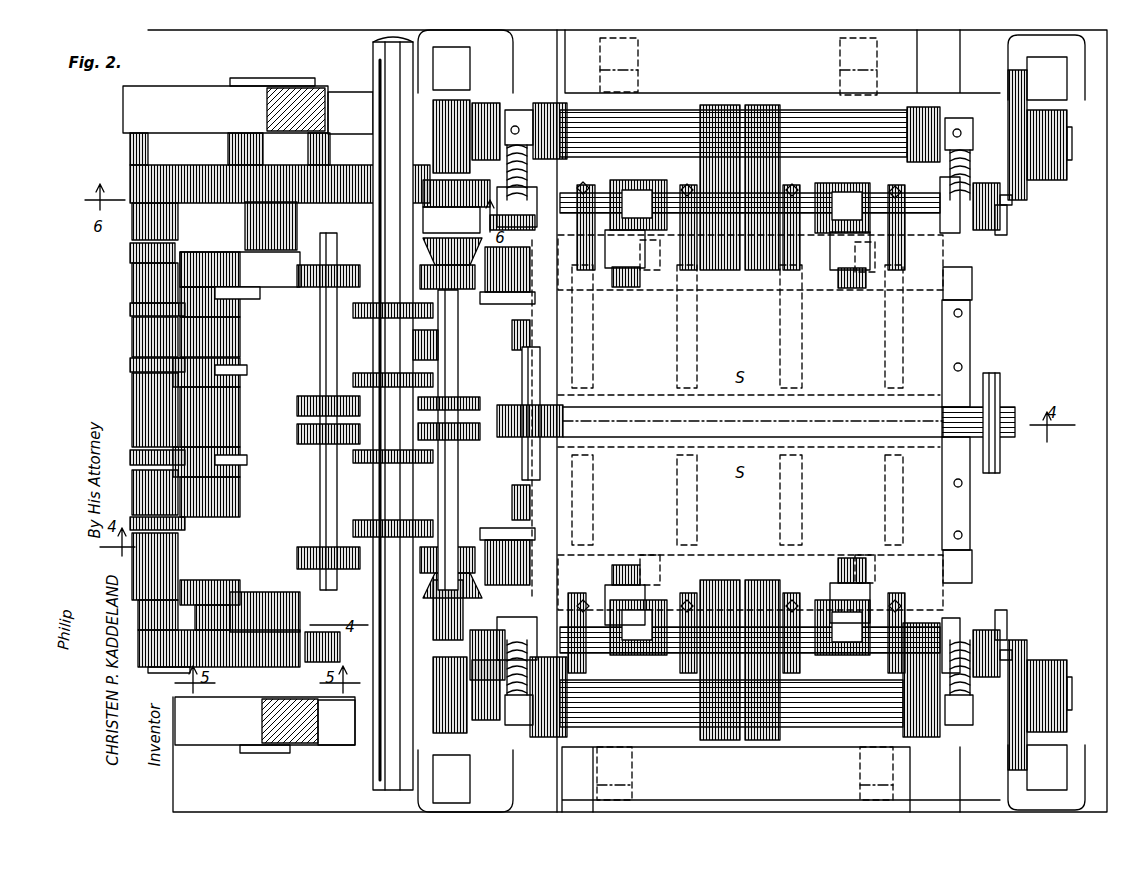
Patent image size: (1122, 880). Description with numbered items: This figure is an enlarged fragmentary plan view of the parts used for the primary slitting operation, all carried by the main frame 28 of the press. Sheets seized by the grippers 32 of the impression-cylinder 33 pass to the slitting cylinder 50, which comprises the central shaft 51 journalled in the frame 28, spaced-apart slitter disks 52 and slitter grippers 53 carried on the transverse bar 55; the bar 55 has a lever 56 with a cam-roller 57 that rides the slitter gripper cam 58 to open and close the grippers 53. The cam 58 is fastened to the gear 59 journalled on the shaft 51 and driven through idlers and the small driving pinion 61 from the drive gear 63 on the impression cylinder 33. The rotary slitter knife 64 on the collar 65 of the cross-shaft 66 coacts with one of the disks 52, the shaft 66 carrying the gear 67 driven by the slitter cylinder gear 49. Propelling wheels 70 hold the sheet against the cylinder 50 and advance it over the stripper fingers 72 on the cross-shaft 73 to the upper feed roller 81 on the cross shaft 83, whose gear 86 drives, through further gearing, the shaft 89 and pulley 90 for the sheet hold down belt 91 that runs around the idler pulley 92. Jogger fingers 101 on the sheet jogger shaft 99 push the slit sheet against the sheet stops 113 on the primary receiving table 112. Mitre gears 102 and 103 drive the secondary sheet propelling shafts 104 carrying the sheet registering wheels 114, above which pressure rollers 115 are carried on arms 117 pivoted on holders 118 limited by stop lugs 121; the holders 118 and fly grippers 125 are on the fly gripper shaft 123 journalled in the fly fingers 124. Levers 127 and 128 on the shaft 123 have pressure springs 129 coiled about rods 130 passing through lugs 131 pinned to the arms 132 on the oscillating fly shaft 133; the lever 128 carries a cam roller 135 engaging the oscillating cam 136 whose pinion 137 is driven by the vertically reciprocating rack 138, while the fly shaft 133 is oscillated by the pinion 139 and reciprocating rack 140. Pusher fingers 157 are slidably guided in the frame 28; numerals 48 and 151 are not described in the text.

The main frame 28 is at (333, 92).
The grippers 32 is at (130, 306).
The impression-cylinder 33 is at (132, 266).
The main gear 48 is at (163, 166).
The slitter cylinder gear 49 is at (208, 166).
The slitting cylinder 50 is at (240, 269).
The central shaft 51 is at (245, 213).
The slitter disks 52 is at (283, 386).
The slitter grippers 53 is at (190, 318).
The transverse bar 55 is at (232, 287).
The lever 56 is at (237, 590).
The cam-roller 57 is at (230, 612).
The slitter gripper cam 58 is at (300, 613).
The gear 59 is at (340, 652).
The small driving pinion 61 is at (152, 672).
The drive gear 63 is at (140, 650).
The rotary slitter knife 64 is at (455, 423).
The collar 65 is at (455, 397).
The cross-shaft 66 is at (385, 242).
The gear 67 is at (375, 200).
The propelling wheels 70 is at (320, 278).
The stripper fingers 72 is at (393, 417).
The cross-shaft 73 is at (418, 357).
The upper feed roller 81 is at (458, 462).
The cross shaft 83 is at (458, 519).
The gear 86 is at (447, 200).
The shaft 89 is at (525, 462).
The pulley 90 is at (565, 410).
The sheet hold down belt 91 is at (753, 413).
The idler pulley 92 is at (950, 412).
The sheet jogger shaft 99 is at (590, 447).
The jogger fingers 101 is at (512, 330).
The mitre gears 102 is at (490, 255).
The mitre gears 103 is at (500, 304).
The secondary sheet propelling shafts 104 is at (735, 330).
The primary receiving table 112 is at (972, 285).
The sheet stops 113 is at (970, 340).
The sheet registering wheels 114 is at (650, 300).
The pressure rollers 115 is at (620, 300).
The arms 117 is at (605, 275).
The holders 118 is at (650, 190).
The stop lugs 121 is at (622, 200).
The fly gripper shaft 123 is at (692, 222).
The fly fingers 124 is at (593, 362).
The fly grippers 125 is at (586, 200).
The lever 127 is at (522, 200).
The lever 128 is at (948, 233).
The pressure springs 129 is at (985, 232).
The rods 130 is at (513, 120).
The lugs 131 is at (520, 118).
The arms 132 is at (567, 120).
The oscillating fly shaft 133 is at (655, 110).
The cam roller 135 is at (1012, 200).
The oscillating cam 136 is at (1007, 230).
The pinion 137 is at (1030, 180).
The vertically reciprocating rack 138 is at (1046, 422).
The pinion 139 is at (480, 152).
The reciprocating rack 140 is at (465, 421).
The frame plate 151 is at (757, 78).
The pusher fingers 157 is at (640, 62).